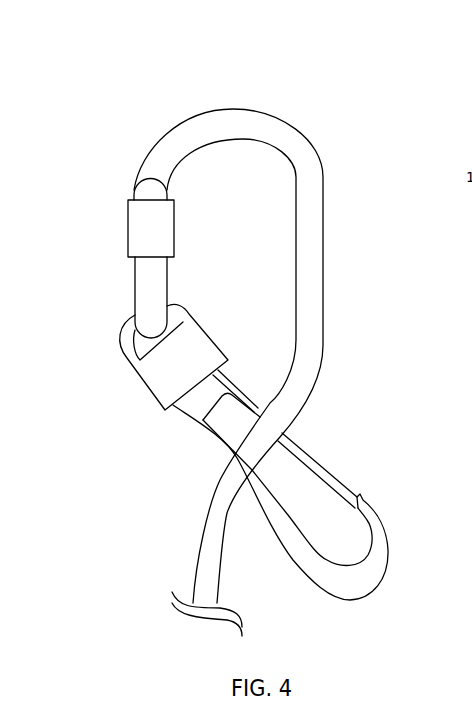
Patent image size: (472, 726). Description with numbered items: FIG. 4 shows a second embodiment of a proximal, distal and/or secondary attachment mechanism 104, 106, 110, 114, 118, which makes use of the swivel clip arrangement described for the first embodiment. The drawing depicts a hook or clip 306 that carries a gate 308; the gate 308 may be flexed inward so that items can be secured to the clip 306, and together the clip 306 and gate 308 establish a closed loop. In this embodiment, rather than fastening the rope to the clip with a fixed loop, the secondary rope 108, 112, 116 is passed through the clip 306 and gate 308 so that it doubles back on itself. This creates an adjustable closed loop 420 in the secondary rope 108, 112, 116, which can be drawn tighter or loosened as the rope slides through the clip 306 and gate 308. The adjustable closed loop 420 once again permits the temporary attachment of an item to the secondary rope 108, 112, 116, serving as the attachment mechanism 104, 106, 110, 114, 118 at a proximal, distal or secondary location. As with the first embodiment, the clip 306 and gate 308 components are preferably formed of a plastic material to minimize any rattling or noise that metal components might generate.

The attachment mechanism 104 is at (149, 227).
The attachment mechanism 106 is at (149, 227).
The attachment mechanism 110 is at (149, 227).
The attachment mechanism 114 is at (149, 227).
The attachment mechanism 118 is at (152, 116).
The secondary rope 108 is at (274, 370).
The secondary rope 112 is at (274, 370).
The secondary rope 116 is at (372, 122).
The adjustable closed loop 420 is at (268, 223).
The clip 306 is at (352, 598).
The gate 308 is at (323, 468).